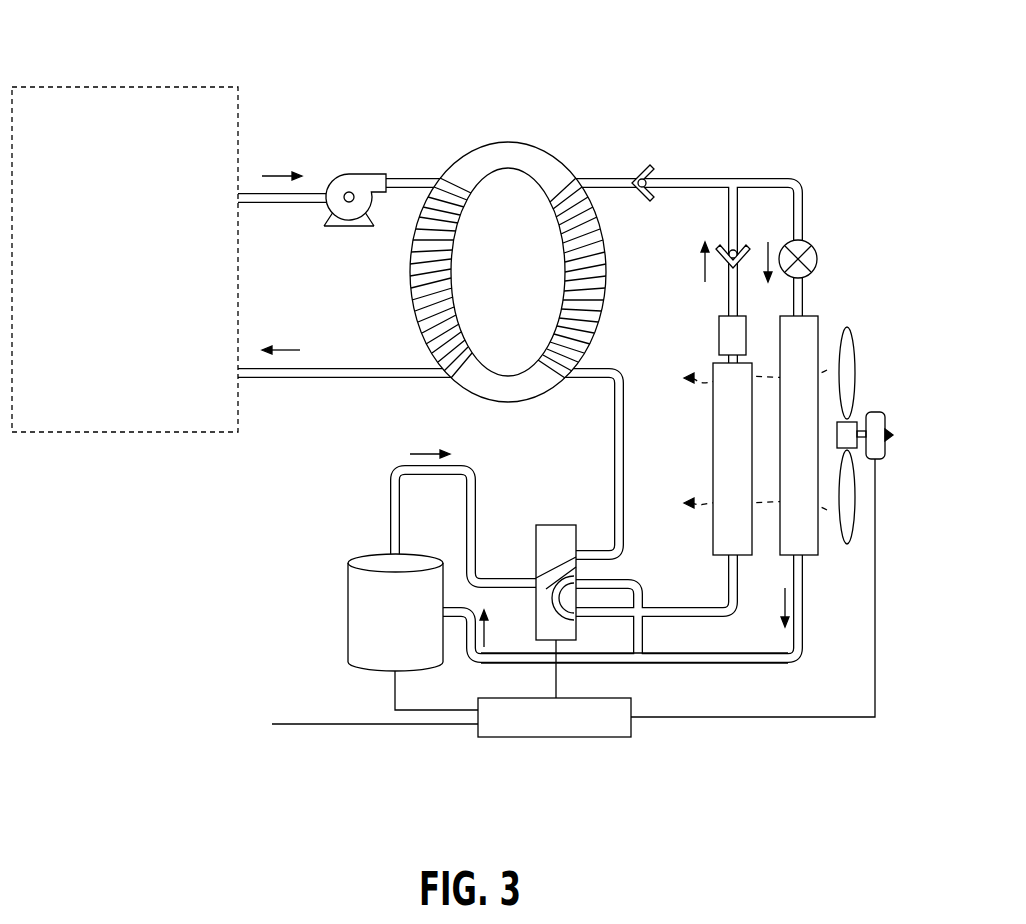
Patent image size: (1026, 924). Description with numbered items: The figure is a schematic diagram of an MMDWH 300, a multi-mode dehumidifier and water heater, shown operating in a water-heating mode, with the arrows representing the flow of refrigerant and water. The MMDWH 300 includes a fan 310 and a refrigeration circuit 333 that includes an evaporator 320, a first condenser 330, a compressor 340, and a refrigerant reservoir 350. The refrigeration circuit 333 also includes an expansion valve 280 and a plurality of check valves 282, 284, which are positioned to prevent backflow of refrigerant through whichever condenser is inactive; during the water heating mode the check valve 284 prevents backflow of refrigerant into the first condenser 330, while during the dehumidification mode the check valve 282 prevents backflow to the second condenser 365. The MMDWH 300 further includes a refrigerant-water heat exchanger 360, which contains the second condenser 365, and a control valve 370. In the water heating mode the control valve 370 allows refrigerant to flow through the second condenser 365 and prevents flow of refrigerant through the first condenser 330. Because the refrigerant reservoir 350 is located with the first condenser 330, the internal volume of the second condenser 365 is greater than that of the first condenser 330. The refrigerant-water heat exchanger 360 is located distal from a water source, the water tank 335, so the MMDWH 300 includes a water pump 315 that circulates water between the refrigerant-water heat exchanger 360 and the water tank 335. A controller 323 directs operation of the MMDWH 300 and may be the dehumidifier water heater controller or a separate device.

The MMDWH 300 is at (471, 403).
The water tank 335 is at (162, 86).
The water pump 315 is at (346, 173).
The refrigerant-water heat exchanger 360 is at (465, 155).
The second condenser 365 is at (552, 188).
The check valve 282 is at (640, 167).
The check valve 284 is at (750, 253).
The expansion valve 280 is at (817, 259).
The refrigerant reservoir 350 is at (718, 336).
The first condenser 330 is at (713, 446).
The evaporator 320 is at (818, 327).
The fan 310 is at (876, 412).
The compressor 340 is at (417, 630).
The control valve 370 is at (546, 525).
The refrigeration circuit 333 is at (722, 657).
The controller 323 is at (512, 738).